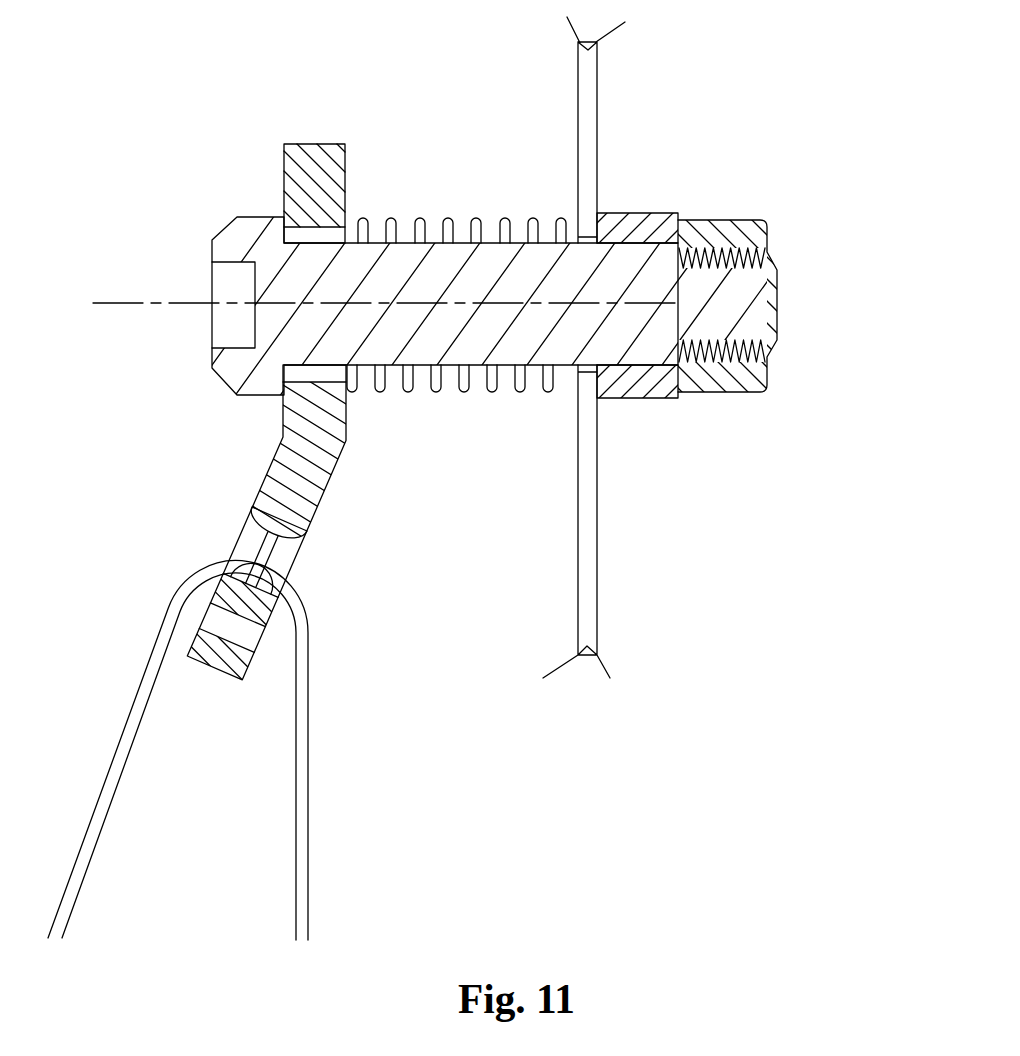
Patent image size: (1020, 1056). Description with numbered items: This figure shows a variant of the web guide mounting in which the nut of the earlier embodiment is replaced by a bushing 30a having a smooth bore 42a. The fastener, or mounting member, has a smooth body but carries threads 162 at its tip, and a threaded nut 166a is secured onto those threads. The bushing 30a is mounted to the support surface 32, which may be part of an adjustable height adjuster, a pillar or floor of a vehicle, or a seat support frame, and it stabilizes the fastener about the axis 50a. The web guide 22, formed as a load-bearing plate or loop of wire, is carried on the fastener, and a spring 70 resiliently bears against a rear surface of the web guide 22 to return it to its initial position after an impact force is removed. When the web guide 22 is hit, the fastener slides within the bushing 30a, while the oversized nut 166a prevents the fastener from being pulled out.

The axis 50a is at (150, 299).
The web guide 22 is at (348, 138).
The spring 70 is at (364, 213).
The support surface 32 is at (592, 80).
The bushing 30a is at (636, 211).
The smooth bore 42a is at (618, 387).
The threaded nut 166a is at (736, 220).
The threads 162 is at (763, 283).